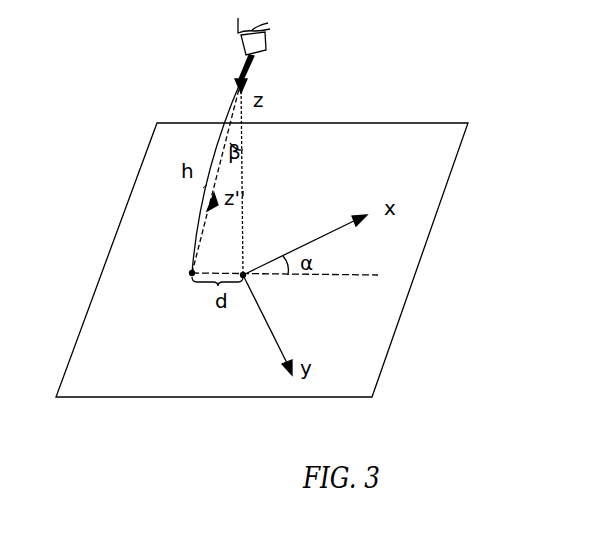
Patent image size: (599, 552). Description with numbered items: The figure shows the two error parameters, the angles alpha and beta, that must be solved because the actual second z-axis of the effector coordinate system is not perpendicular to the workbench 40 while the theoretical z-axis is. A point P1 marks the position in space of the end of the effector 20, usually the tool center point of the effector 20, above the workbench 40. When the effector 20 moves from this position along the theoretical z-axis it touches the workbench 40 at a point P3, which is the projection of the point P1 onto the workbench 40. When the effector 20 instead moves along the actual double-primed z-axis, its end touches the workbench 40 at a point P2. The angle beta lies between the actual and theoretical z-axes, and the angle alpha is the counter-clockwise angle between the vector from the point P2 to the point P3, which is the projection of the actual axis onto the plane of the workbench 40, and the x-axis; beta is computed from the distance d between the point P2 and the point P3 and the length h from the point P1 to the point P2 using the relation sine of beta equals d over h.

The effector 20 is at (270, 29).
The workbench 40 is at (457, 163).
The point P1 is at (247, 80).
The point P2 is at (190, 271).
The point P3 is at (245, 273).